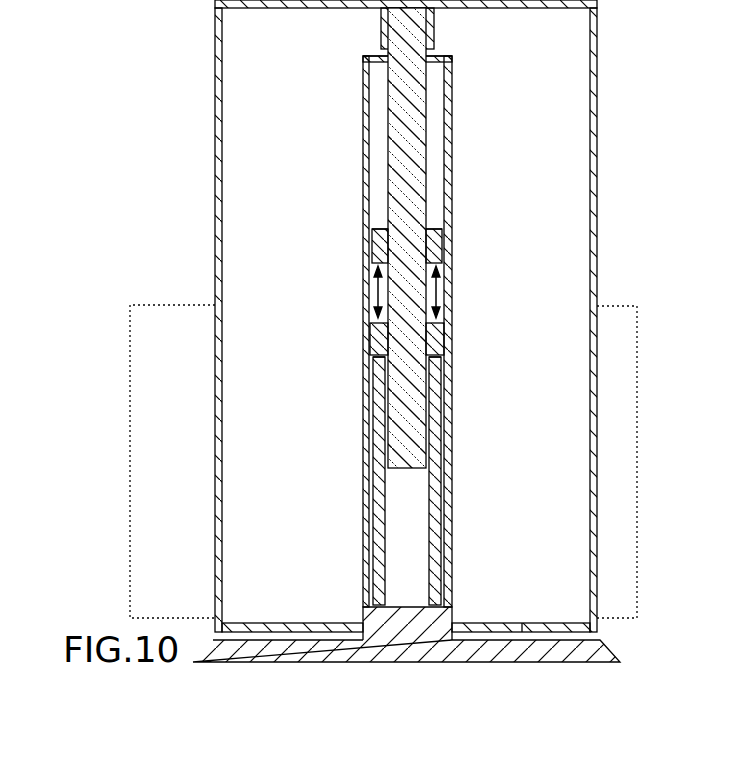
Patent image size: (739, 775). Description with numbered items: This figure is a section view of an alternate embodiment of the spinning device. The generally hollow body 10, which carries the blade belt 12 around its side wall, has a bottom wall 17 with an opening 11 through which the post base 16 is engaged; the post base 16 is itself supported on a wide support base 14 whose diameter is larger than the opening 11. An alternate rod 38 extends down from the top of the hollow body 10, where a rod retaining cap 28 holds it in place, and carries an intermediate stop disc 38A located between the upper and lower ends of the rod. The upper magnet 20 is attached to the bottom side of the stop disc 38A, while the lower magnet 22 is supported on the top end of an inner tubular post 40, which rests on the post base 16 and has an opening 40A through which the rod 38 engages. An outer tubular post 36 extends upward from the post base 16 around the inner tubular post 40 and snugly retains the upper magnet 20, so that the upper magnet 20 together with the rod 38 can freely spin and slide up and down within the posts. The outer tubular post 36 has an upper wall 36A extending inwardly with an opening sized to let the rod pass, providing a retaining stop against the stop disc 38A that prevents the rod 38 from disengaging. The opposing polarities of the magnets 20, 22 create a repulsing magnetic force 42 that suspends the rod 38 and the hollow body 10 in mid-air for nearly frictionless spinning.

The hollow body 10 is at (195, 162).
The opening 11 is at (455, 625).
The blade belt 12 is at (142, 395).
The support base 14 is at (300, 648).
The post base 16 is at (362, 605).
The bottom wall 17 is at (522, 625).
The upper magnet 20 is at (372, 250).
The lower magnet 22 is at (445, 345).
The rod retaining cap 28 is at (381, 20).
The outer tubular post 36 is at (365, 150).
The upper wall 36A is at (365, 60).
The alternate rod 38 is at (445, 185).
The intermediate stop disc 38A is at (380, 228).
The inner tubular post 40 is at (375, 414).
The opening 40A is at (383, 362).
The repulsing magnetic force 42 is at (375, 295).